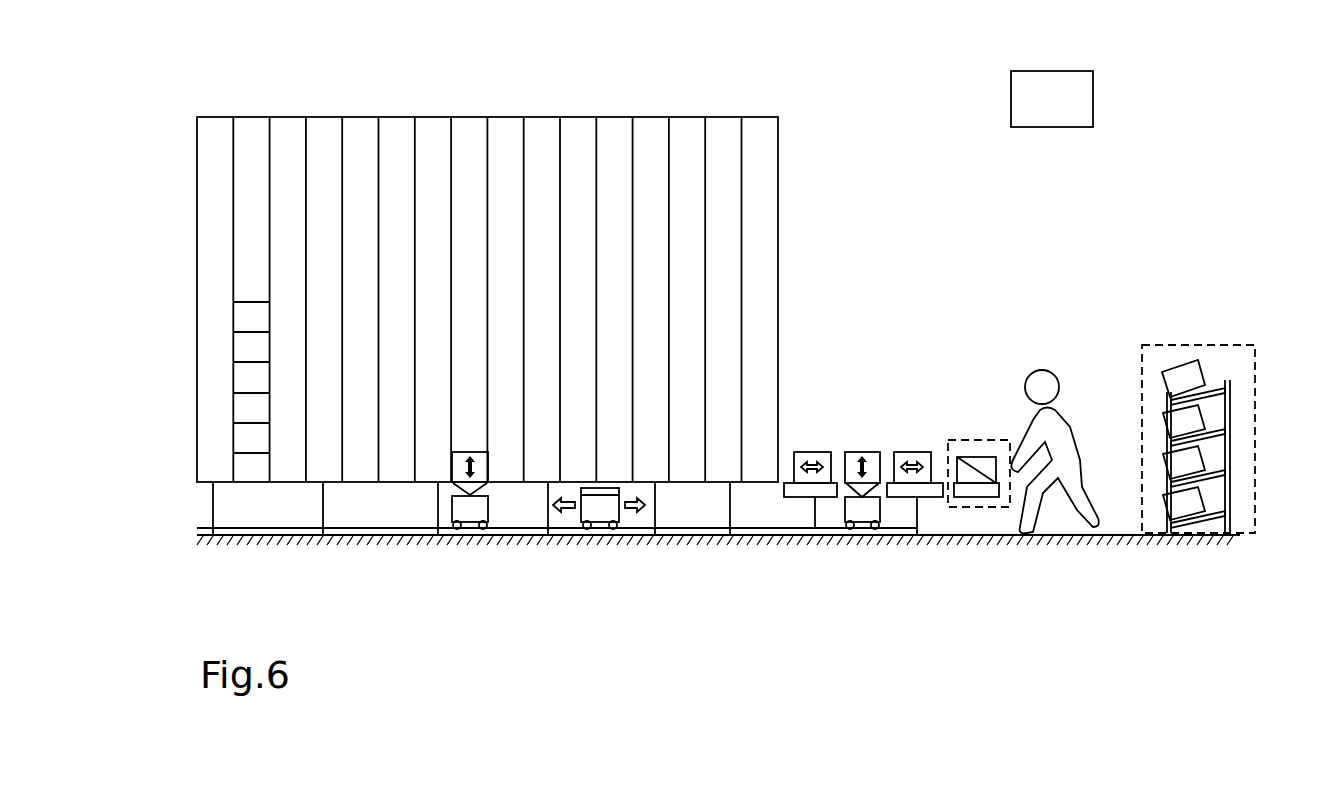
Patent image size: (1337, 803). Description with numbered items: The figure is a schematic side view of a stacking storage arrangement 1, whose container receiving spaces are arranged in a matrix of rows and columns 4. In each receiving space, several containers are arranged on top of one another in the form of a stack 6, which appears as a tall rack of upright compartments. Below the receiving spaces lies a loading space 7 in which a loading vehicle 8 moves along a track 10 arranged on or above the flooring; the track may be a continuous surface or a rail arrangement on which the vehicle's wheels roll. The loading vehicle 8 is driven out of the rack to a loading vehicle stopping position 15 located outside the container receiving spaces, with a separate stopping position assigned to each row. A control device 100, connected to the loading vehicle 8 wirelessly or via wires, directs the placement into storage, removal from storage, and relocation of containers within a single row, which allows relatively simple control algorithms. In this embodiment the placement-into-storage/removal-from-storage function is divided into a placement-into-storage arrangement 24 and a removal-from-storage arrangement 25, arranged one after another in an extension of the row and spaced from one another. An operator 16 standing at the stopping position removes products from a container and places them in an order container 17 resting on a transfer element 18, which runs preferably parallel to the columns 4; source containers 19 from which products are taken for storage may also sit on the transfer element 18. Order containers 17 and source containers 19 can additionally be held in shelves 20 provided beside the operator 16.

The stacking storage arrangement 1 is at (833, 96).
The columns 4 is at (254, 130).
The stack 6 is at (246, 470).
The loading space 7 is at (376, 505).
The loading vehicle 8 is at (468, 510).
The track 10 is at (518, 530).
The loading vehicle stopping position 15 is at (790, 650).
The operator 16 is at (1072, 467).
The order container 17 is at (985, 463).
The transfer element 18 is at (972, 497).
The source containers 19 is at (988, 491).
The shelves 20 is at (1228, 425).
The placement-into-storage arrangement 24 is at (826, 490).
The removal-from-storage arrangement 25 is at (922, 492).
The control device 100 is at (1068, 115).